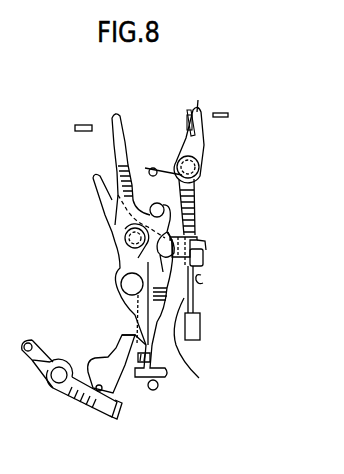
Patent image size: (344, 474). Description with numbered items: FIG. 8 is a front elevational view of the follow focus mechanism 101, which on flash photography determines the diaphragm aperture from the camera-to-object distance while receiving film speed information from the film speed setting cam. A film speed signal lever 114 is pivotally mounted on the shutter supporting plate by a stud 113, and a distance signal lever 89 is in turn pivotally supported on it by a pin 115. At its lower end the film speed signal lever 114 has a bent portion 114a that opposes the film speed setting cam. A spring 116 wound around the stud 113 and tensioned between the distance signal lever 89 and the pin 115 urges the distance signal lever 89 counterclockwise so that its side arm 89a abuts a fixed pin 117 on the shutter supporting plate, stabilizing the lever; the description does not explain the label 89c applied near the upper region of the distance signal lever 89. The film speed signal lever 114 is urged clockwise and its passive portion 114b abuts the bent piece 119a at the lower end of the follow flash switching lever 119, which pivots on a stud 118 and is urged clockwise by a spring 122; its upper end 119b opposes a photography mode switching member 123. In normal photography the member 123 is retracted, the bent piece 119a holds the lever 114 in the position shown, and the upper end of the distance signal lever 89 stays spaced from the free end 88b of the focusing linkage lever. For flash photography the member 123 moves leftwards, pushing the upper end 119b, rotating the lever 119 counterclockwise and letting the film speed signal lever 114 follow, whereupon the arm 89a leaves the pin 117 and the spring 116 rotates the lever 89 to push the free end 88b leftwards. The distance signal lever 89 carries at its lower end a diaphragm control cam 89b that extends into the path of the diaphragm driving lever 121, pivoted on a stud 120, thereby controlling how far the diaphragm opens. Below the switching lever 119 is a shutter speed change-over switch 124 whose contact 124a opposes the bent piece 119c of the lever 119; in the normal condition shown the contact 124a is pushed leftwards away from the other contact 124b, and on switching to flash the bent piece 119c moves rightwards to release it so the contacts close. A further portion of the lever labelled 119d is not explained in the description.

The free end of the focusing linkage lever 88b is at (87, 123).
The lever arm tip 89c is at (131, 118).
The distance signal lever 89 is at (117, 208).
The fixed pin 117 is at (152, 176).
The stud 118 is at (200, 177).
The spring 122 is at (202, 148).
The photography mode switching member 123 is at (228, 114).
The upper end of the follow focus switching lever 119b is at (205, 92).
The follow flash switching lever 119 is at (203, 190).
The side arm 89a is at (198, 212).
The follow focus mechanism 101 is at (217, 229).
The bent piece 119a is at (198, 241).
The bent piece 119c is at (205, 257).
The link projection 119d is at (205, 267).
The passive portion 114b is at (202, 282).
The shutter speed change-over switch 124 is at (200, 338).
The contact 124b is at (200, 327).
The contact 124a is at (211, 345).
The pin 115 is at (125, 238).
The film speed signal lever 114 is at (120, 264).
The stud 113 is at (128, 285).
The spring 116 is at (138, 332).
The diaphragm control cam 89b is at (96, 385).
The stud 120 is at (60, 380).
The diaphragm driving lever 121 is at (78, 410).
The bent portion 114a is at (140, 378).